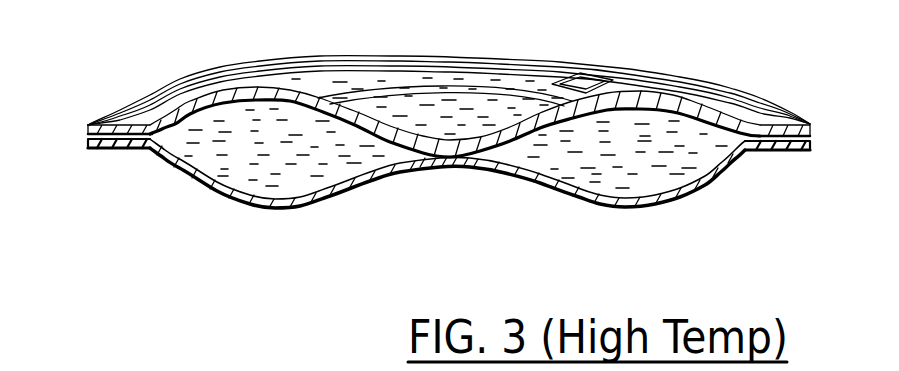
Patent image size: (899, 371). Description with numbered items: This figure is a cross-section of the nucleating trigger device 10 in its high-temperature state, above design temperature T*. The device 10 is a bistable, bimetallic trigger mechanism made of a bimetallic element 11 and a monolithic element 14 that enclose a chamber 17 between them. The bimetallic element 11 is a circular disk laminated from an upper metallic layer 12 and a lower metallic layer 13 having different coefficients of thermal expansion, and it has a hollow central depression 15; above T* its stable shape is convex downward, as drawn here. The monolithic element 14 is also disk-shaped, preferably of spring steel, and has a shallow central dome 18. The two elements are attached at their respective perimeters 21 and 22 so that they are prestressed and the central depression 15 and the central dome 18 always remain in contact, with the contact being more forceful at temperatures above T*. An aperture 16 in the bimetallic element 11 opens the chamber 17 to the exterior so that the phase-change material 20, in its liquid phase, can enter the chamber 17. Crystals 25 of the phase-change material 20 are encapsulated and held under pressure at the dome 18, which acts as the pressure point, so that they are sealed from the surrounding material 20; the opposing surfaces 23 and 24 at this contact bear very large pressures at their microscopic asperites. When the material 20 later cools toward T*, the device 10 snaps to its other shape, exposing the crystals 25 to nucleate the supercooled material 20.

The nucleating trigger device 10 is at (614, 52).
The bimetallic element 11 is at (712, 97).
The upper metallic layer 12 is at (813, 125).
The lower metallic layer 13 is at (815, 140).
The monolithic element 14 is at (707, 177).
The central depression 15 is at (456, 131).
The aperture 16 is at (578, 72).
The chamber 17 is at (265, 137).
The central dome 18 is at (448, 171).
The phase-change material 20 is at (566, 150).
The perimeter of bimetallic element 21 is at (96, 96).
The perimeter of monolithic element 22 is at (82, 142).
The opposing surface 23 is at (190, 174).
The opposing surface 24 is at (290, 198).
The crystals 25 is at (417, 168).